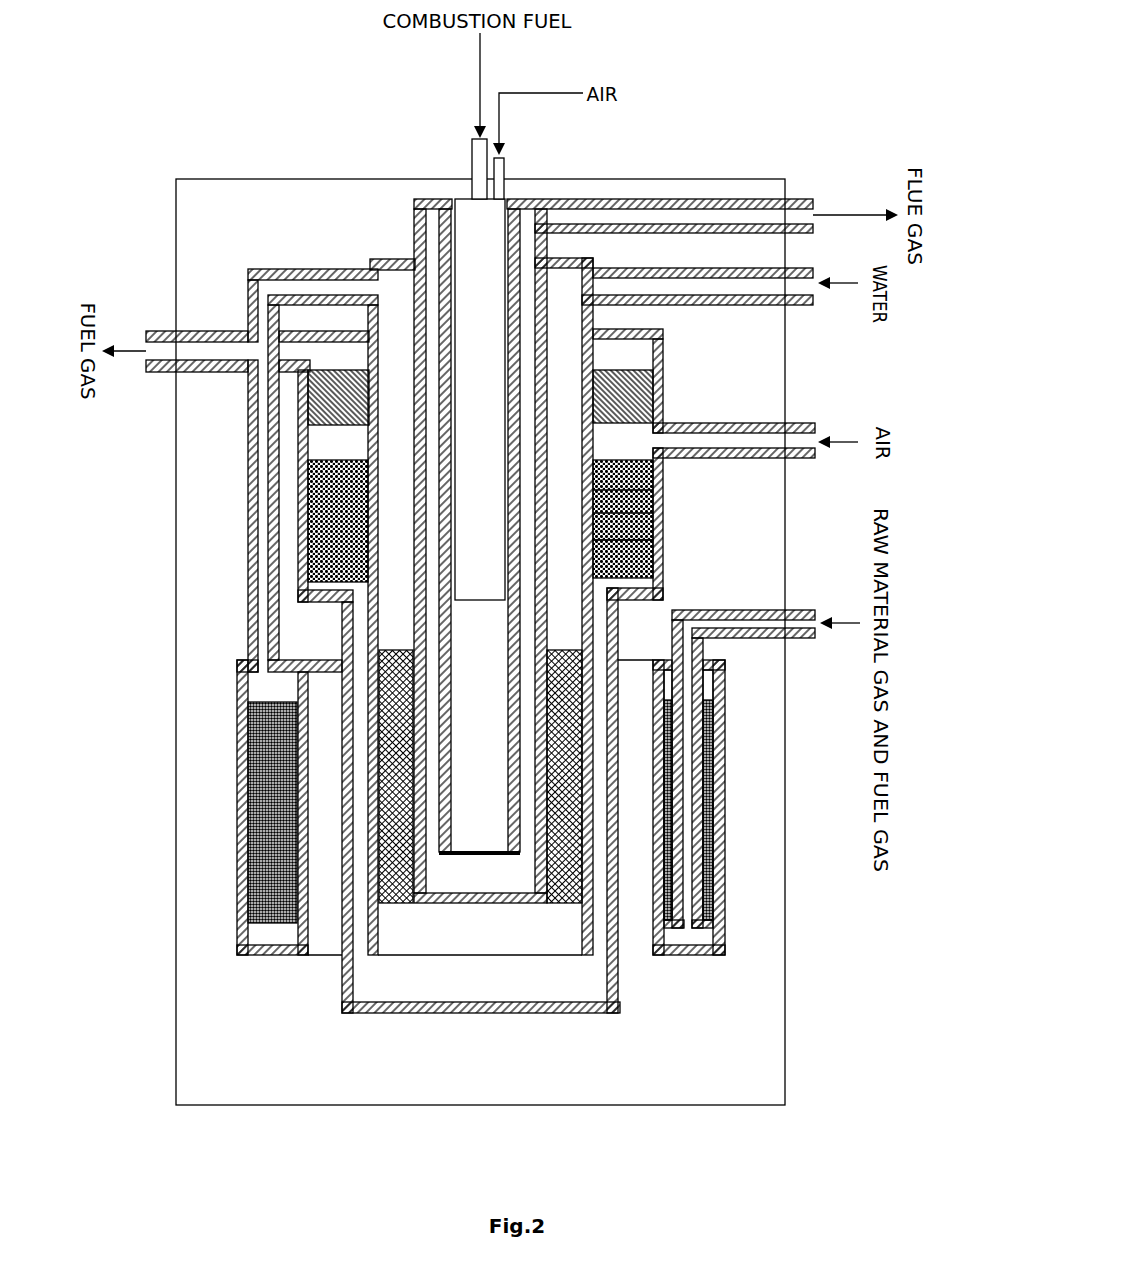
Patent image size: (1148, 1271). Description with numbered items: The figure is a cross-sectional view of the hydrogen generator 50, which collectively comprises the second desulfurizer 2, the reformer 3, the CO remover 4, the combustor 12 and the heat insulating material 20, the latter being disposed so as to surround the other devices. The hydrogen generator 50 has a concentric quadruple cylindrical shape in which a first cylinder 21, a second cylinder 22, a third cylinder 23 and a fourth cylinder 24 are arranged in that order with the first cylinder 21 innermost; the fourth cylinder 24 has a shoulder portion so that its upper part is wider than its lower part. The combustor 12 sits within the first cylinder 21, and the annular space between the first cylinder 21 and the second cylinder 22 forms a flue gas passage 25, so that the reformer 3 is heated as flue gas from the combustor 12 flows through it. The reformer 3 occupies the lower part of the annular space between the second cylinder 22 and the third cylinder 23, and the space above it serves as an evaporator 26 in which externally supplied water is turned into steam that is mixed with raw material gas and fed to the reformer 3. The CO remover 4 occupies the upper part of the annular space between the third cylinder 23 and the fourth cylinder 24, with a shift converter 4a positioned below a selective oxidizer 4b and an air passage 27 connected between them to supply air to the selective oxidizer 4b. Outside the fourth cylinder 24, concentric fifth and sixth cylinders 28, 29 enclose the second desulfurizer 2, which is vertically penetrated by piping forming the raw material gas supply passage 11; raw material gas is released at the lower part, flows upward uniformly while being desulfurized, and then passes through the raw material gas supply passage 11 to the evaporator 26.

The hydrogen generator 50 is at (298, 31).
The second desulfurizer 2 is at (275, 798).
The reformer 3 is at (400, 903).
The CO remover 4 is at (229, 466).
The shift converter 4a is at (320, 495).
The selective oxidizer 4b is at (300, 405).
The raw material gas supply passage 11 is at (248, 587).
The combustor 12 is at (458, 196).
The heat insulating material 20 is at (786, 1000).
The first cylinder 21 is at (522, 489).
The second cylinder 22 is at (548, 514).
The third cylinder 23 is at (593, 541).
The fourth cylinder 24 is at (663, 568).
The flue gas passage 25 is at (530, 820).
The evaporator 26 is at (563, 339).
The air passage 27 is at (783, 422).
The fifth cylinder 28 is at (728, 818).
The sixth cylinder 29 is at (673, 860).